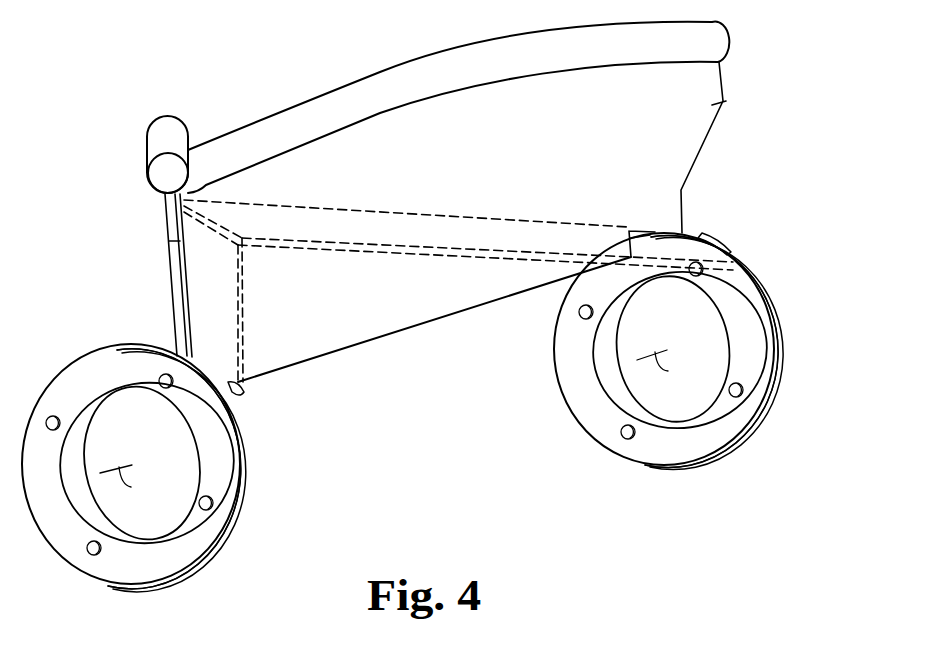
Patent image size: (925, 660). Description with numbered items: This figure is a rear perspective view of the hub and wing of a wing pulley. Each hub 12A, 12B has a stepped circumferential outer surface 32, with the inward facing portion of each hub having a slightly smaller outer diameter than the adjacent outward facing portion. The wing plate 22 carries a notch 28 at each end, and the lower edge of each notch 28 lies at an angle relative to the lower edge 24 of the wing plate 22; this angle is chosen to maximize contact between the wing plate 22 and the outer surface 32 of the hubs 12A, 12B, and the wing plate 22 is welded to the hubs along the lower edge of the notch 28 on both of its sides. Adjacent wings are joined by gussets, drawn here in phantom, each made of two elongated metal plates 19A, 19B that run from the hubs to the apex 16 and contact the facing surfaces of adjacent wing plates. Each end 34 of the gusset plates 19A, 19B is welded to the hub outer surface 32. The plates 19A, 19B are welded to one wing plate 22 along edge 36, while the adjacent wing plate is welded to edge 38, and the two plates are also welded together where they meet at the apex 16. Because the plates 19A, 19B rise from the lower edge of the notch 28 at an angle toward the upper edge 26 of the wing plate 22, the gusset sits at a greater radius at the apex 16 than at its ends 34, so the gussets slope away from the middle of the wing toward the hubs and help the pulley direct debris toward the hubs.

The hub 12A is at (82, 575).
The hub 12B is at (764, 426).
The apex 16 is at (208, 190).
The gusset plate 19A is at (244, 326).
The gusset plate 19B is at (447, 255).
The wing plate 22 is at (725, 101).
The lower edge 24 is at (437, 322).
The upper edge 26 is at (368, 116).
The notch 28 is at (641, 230).
The outer surface 32 is at (247, 470).
The end 34 is at (233, 398).
The edge 36 is at (453, 217).
The edge 38 is at (333, 250).